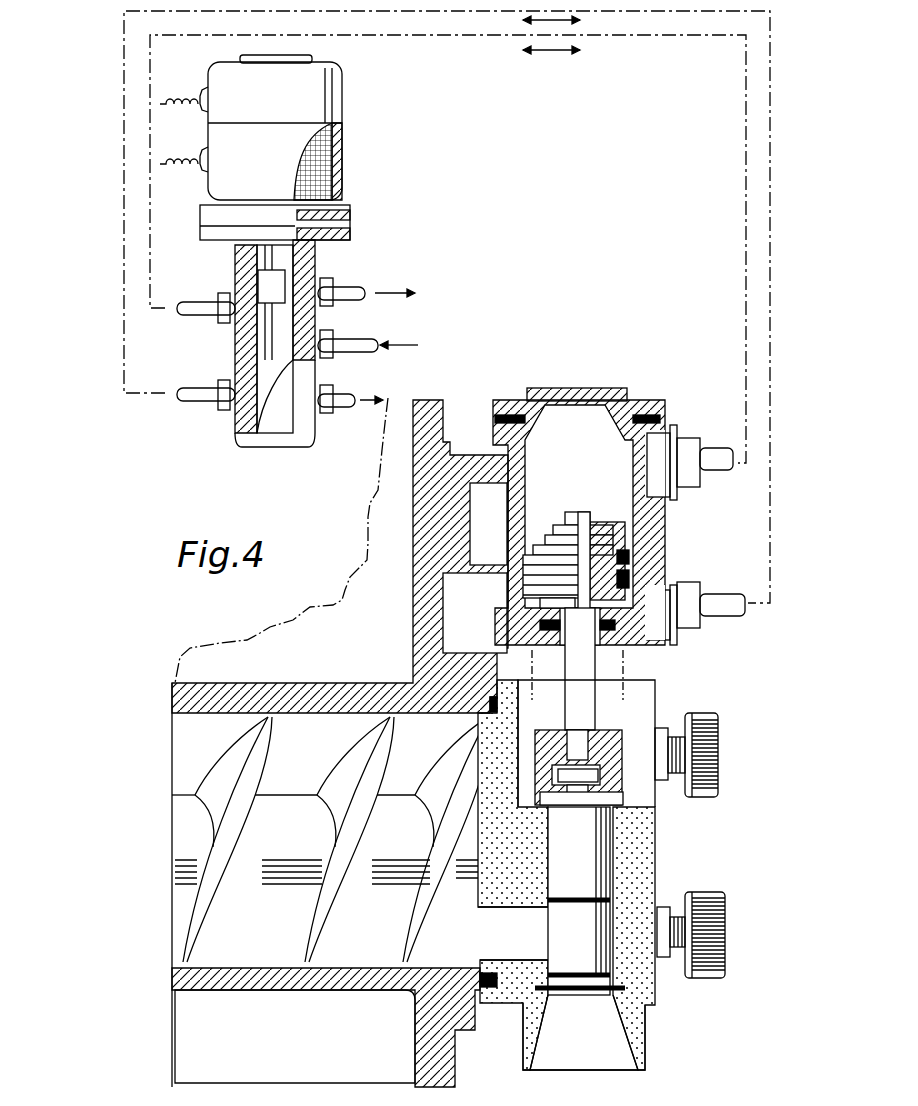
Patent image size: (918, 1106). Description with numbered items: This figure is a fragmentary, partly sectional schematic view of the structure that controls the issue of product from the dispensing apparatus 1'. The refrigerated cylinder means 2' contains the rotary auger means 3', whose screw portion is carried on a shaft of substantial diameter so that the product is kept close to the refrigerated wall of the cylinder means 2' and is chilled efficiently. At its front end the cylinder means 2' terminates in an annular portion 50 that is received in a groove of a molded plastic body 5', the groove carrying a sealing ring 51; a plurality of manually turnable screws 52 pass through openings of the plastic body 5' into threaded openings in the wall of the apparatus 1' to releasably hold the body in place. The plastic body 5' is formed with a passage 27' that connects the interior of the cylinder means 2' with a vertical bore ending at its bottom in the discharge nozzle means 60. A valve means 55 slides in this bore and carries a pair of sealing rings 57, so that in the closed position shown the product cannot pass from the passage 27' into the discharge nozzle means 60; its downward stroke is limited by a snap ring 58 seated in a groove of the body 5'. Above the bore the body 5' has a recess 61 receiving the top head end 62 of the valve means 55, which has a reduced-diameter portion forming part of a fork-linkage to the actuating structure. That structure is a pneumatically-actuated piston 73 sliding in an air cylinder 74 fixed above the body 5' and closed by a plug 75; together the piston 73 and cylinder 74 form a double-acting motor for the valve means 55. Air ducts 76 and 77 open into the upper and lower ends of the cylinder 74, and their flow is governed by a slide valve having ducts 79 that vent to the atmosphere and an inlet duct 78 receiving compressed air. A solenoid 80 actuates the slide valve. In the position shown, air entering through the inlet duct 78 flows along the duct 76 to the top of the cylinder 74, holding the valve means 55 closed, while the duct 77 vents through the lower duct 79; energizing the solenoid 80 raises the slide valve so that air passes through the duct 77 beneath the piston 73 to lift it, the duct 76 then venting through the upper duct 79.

The dispensing apparatus 1' is at (340, 742).
The refrigerated cylinder means 2' is at (326, 1022).
The rotary auger means 3' is at (332, 839).
The molded plastic body 5' is at (592, 875).
The passage 27' is at (490, 935).
The annular portion 50 is at (486, 692).
The sealing ring 51 is at (507, 987).
The manually turnable screws 52 is at (706, 718).
The valve means 55 is at (668, 829).
The sealing rings 57 is at (555, 968).
The snap ring 58 is at (617, 995).
The discharge nozzle means 60 is at (627, 1060).
The recess 61 is at (645, 690).
The top head end 62 is at (598, 779).
The pneumatically-actuated piston 73 is at (633, 557).
The air cylinder 74 is at (591, 456).
The plug 75 is at (561, 388).
The air duct 76 is at (713, 460).
The air duct 77 is at (283, 285).
The inlet duct 78 is at (365, 338).
The ducts 79 is at (355, 288).
The solenoid 80 is at (323, 157).